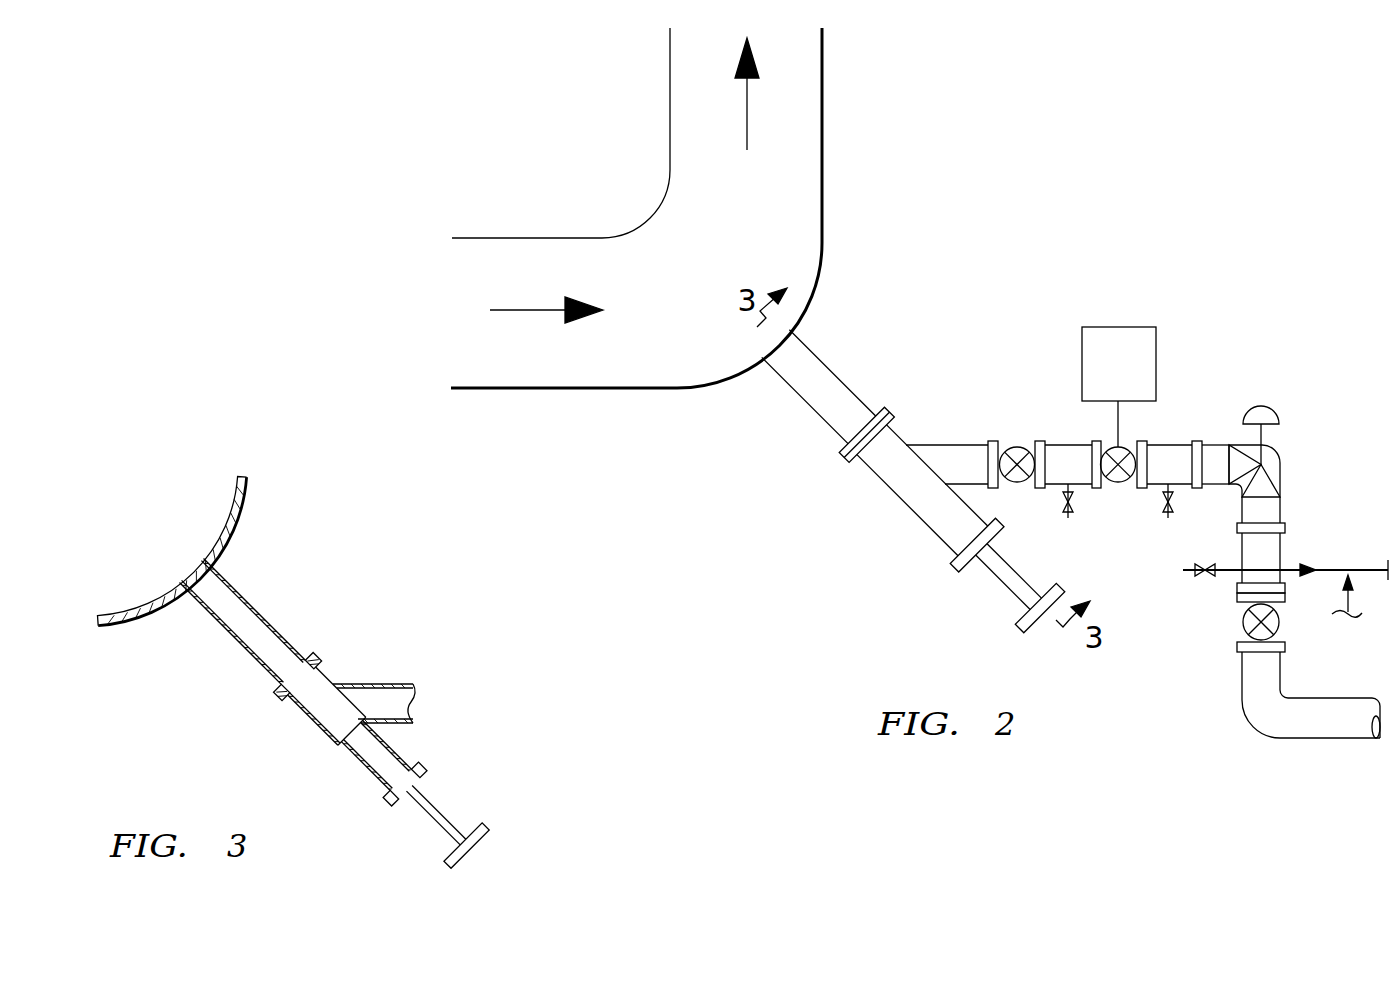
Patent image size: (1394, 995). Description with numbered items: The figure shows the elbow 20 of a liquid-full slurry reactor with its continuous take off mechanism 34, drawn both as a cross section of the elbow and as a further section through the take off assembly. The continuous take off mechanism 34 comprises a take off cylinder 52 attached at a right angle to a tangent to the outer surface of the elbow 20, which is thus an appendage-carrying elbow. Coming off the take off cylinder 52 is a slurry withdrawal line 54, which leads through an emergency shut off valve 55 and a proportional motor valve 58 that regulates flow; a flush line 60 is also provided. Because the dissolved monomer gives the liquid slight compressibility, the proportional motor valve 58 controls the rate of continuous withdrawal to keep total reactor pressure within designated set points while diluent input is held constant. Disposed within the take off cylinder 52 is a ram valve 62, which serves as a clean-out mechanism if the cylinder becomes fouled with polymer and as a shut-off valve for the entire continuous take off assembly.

In FIG. 2, the elbow 20 is at (823, 173).
In FIG. 3, the elbow 20 is at (249, 503).
In FIG. 2, the take off cylinder 52 is at (823, 357).
In FIG. 3, the take off cylinder 52 is at (257, 603).
In FIG. 2, the continuous take off mechanism 34 is at (925, 408).
In FIG. 3, the continuous take off mechanism 34 is at (356, 640).
In FIG. 2, the slurry withdrawal line 54 is at (1021, 422).
In FIG. 3, the slurry withdrawal line 54 is at (426, 680).
In FIG. 2, the emergency shut off valve 55 is at (1155, 422).
In FIG. 2, the proportional motor valve 58 is at (1271, 409).
In FIG. 2, the flush line 60 is at (1223, 575).
In FIG. 3, the ram valve 62 is at (347, 737).